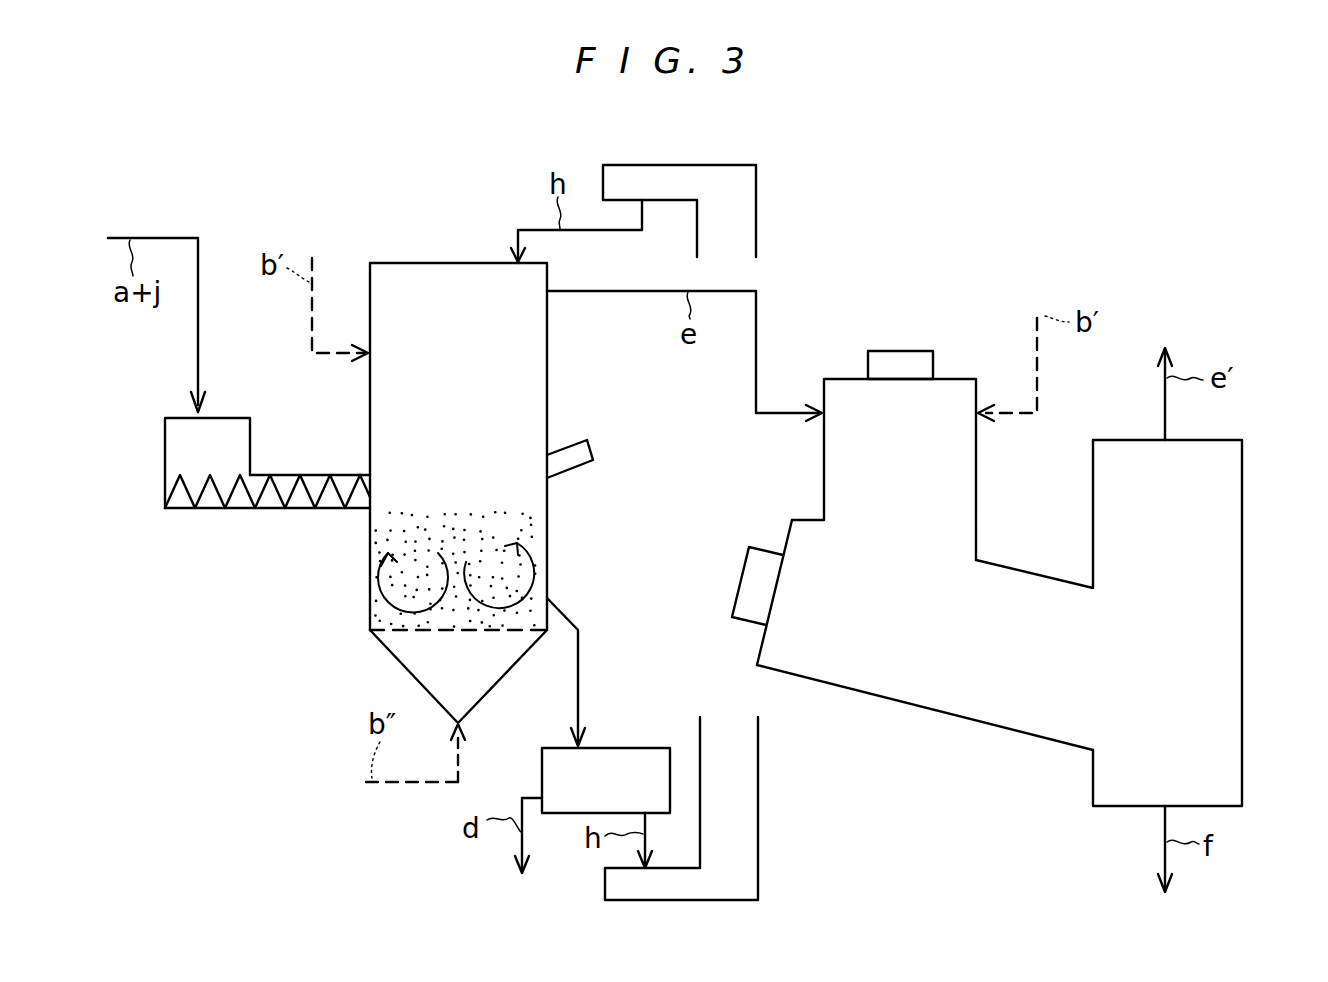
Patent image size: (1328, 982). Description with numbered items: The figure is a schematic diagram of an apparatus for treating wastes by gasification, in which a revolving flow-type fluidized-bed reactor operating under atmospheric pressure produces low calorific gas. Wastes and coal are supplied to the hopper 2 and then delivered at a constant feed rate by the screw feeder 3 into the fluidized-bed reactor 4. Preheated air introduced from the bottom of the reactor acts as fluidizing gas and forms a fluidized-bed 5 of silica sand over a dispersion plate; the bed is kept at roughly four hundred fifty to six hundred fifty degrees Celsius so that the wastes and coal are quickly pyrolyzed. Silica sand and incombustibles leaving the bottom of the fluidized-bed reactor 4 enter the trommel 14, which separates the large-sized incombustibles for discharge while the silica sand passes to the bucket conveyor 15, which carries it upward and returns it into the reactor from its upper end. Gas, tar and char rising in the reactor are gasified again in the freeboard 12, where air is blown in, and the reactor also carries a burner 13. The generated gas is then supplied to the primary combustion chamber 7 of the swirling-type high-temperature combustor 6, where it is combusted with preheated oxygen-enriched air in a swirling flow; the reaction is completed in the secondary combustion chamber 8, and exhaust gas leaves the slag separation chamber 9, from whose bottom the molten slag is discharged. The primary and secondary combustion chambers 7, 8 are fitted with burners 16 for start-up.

The hopper 2 is at (239, 417).
The screw feeder 3 is at (270, 508).
The fluidized-bed reactor 4 is at (548, 352).
The fluidized-bed 5 is at (548, 545).
The swirling-type high-temperature combustor 6 is at (945, 718).
The primary combustion chamber 7 is at (875, 453).
The secondary combustion chamber 8 is at (1002, 620).
The slag separation chamber 9 is at (1224, 578).
The freeboard 12 is at (440, 290).
The burner 13 is at (564, 452).
The trommel 14 is at (627, 748).
The bucket conveyor 15 is at (757, 200).
The burners 16 is at (907, 351).